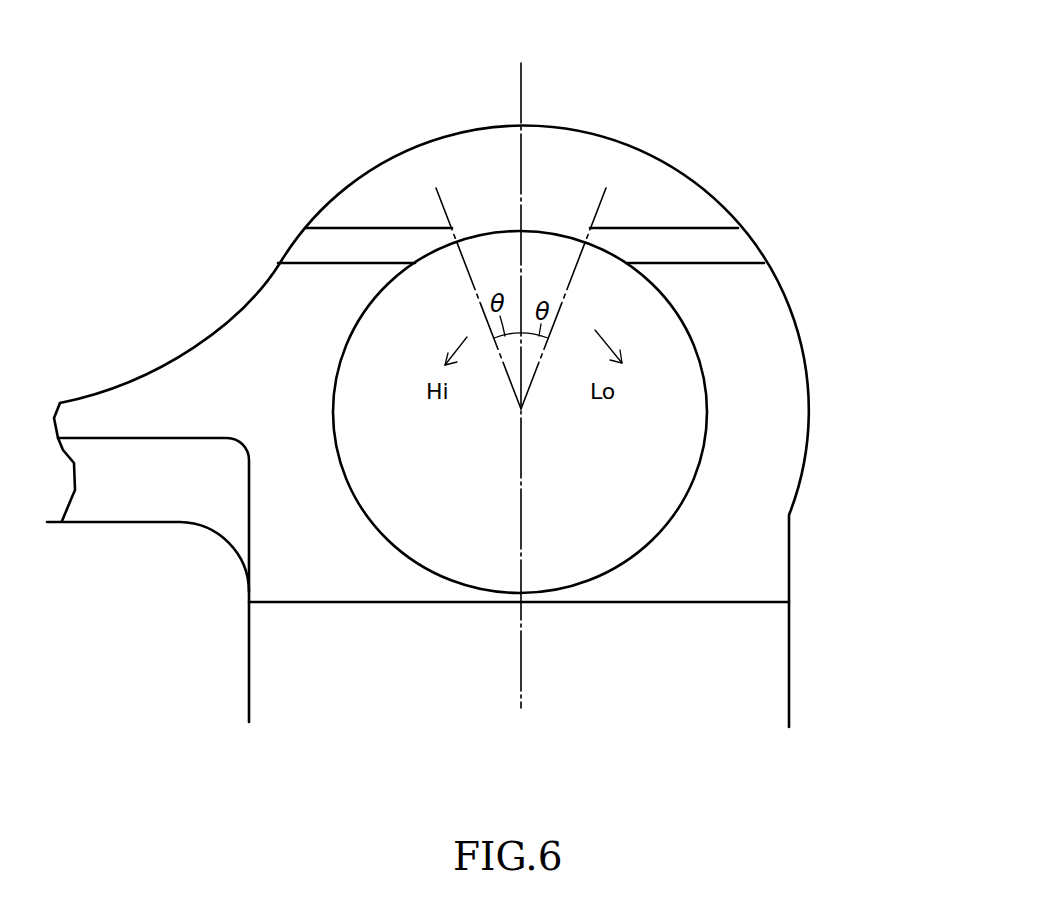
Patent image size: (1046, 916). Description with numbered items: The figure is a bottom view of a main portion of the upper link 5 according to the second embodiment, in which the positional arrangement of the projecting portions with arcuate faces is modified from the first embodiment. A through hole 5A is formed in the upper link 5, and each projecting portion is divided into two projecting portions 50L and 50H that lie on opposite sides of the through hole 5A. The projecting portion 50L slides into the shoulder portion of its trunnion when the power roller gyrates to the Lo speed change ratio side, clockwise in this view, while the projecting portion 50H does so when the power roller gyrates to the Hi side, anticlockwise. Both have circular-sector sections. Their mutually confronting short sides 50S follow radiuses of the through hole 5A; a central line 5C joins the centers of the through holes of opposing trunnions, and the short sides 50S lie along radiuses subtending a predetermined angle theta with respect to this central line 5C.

The upper link 5 is at (168, 350).
The through hole 5A is at (697, 452).
The central line 5C is at (526, 100).
The projecting portion 50H is at (333, 241).
The projecting portion 50L is at (677, 240).
The short sides 50S is at (455, 233).